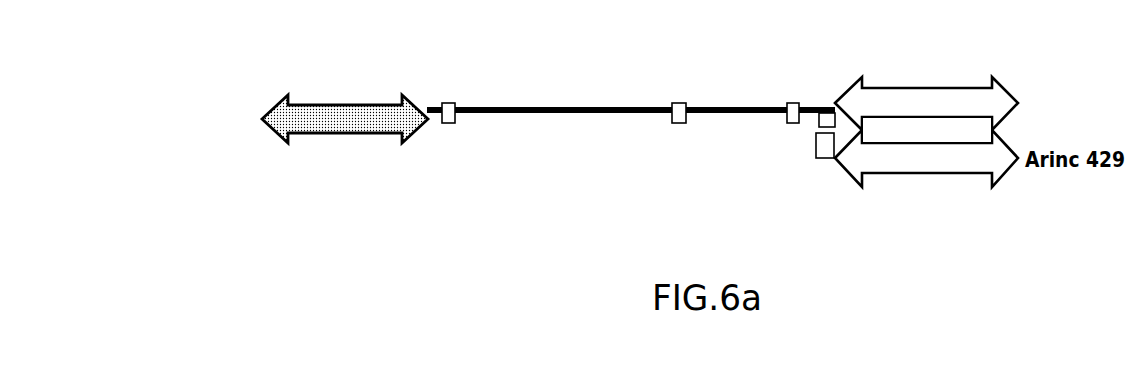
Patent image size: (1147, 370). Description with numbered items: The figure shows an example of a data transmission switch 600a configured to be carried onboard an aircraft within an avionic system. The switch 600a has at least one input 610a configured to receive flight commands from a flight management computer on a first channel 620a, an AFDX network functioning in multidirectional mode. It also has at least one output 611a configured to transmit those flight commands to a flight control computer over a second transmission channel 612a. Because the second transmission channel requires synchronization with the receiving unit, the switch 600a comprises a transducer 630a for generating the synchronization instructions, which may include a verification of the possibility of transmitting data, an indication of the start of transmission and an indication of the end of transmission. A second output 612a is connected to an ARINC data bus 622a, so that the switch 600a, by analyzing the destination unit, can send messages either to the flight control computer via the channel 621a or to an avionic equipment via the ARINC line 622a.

The first channel 620a is at (350, 137).
The data transmission switch 600a is at (588, 115).
The input 610a is at (447, 123).
The transducer 630a is at (679, 123).
The output 611a is at (818, 118).
The second output 612a is at (827, 160).
The channel 621a is at (930, 85).
The ARINC 429 data bus 622a is at (930, 177).